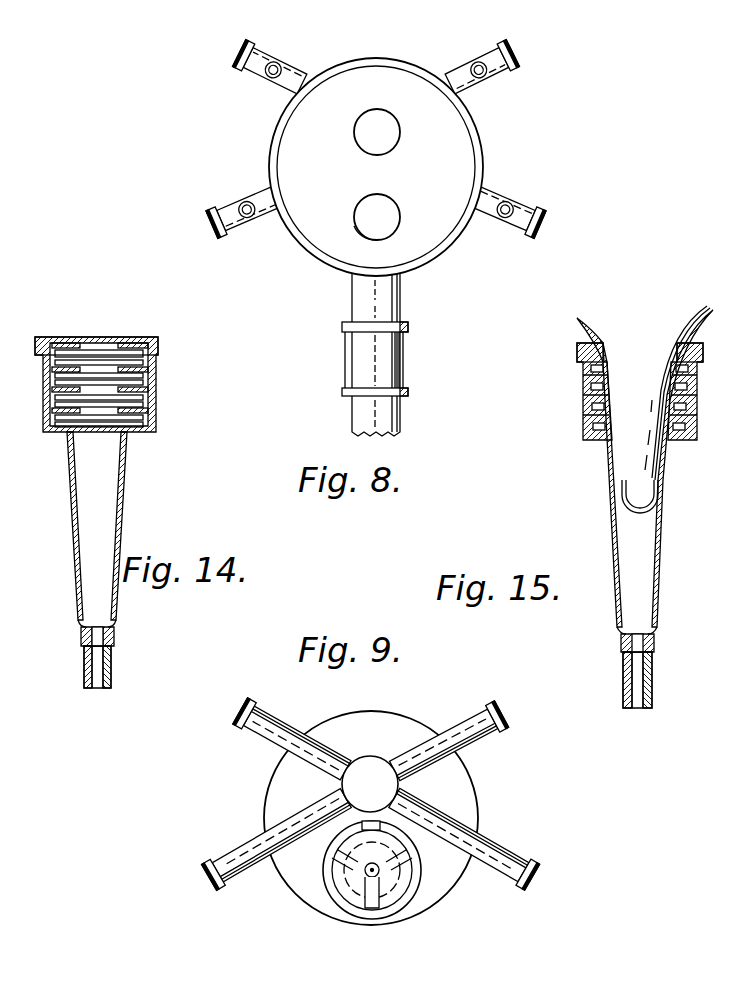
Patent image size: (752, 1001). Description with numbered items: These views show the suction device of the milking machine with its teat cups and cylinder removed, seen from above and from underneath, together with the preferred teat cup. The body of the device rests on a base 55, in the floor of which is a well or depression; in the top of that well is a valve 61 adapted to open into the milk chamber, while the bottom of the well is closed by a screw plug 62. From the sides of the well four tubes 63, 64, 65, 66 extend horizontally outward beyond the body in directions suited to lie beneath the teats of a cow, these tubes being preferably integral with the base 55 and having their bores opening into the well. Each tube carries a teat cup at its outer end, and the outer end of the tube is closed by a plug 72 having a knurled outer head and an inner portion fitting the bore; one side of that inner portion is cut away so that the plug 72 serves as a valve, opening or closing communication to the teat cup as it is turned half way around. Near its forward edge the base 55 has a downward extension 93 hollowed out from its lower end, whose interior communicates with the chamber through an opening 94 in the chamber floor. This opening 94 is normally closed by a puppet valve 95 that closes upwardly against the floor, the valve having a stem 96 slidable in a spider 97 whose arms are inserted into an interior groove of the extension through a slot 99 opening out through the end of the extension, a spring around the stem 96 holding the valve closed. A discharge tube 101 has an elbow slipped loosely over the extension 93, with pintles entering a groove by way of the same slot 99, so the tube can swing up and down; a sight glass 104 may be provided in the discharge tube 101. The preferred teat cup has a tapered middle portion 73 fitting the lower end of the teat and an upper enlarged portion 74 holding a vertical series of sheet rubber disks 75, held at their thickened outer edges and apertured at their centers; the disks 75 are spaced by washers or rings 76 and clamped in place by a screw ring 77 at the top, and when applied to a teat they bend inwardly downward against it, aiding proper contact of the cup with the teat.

In FIG. 8, the base 55 is at (441, 245).
In FIG. 9, the base 55 is at (438, 880).
In FIG. 8, the valve 61 is at (386, 139).
In FIG. 9, the screw plug 62 is at (371, 777).
In FIG. 8, the tube 63 is at (222, 192).
In FIG. 9, the tube 63 is at (487, 837).
In FIG. 8, the tube 64 is at (540, 214).
In FIG. 9, the tube 64 is at (254, 845).
In FIG. 8, the tube 65 is at (486, 63).
In FIG. 9, the tube 65 is at (282, 720).
In FIG. 8, the tube 66 is at (265, 62).
In FIG. 9, the tube 66 is at (478, 740).
In FIG. 8, the plug 72 is at (216, 223).
In FIG. 9, the plug 72 is at (528, 874).
In FIG. 14, the tapered middle portion 73 is at (70, 498).
In FIG. 15, the tapered middle portion 73 is at (616, 535).
In FIG. 14, the upper enlarged portion 74 is at (120, 369).
In FIG. 15, the upper enlarged portion 74 is at (640, 412).
In FIG. 14, the sheet rubber disks 75 is at (126, 345).
In FIG. 15, the sheet rubber disks 75 is at (606, 426).
In FIG. 14, the washers or rings 76 is at (158, 426).
In FIG. 15, the washers or rings 76 is at (697, 409).
In FIG. 14, the screw ring 77 is at (157, 341).
In FIG. 15, the screw ring 77 is at (578, 347).
In FIG. 9, the downward extension 93 is at (338, 902).
In FIG. 8, the opening 94 is at (363, 236).
In FIG. 8, the puppet valve 95 is at (380, 221).
In FIG. 9, the puppet valve 95 is at (392, 883).
In FIG. 9, the stem 96 is at (364, 882).
In FIG. 9, the spider 97 is at (356, 874).
In FIG. 9, the slot 99 is at (386, 882).
In FIG. 8, the discharge tube 101 is at (394, 426).
In FIG. 8, the sight glass 104 is at (404, 370).